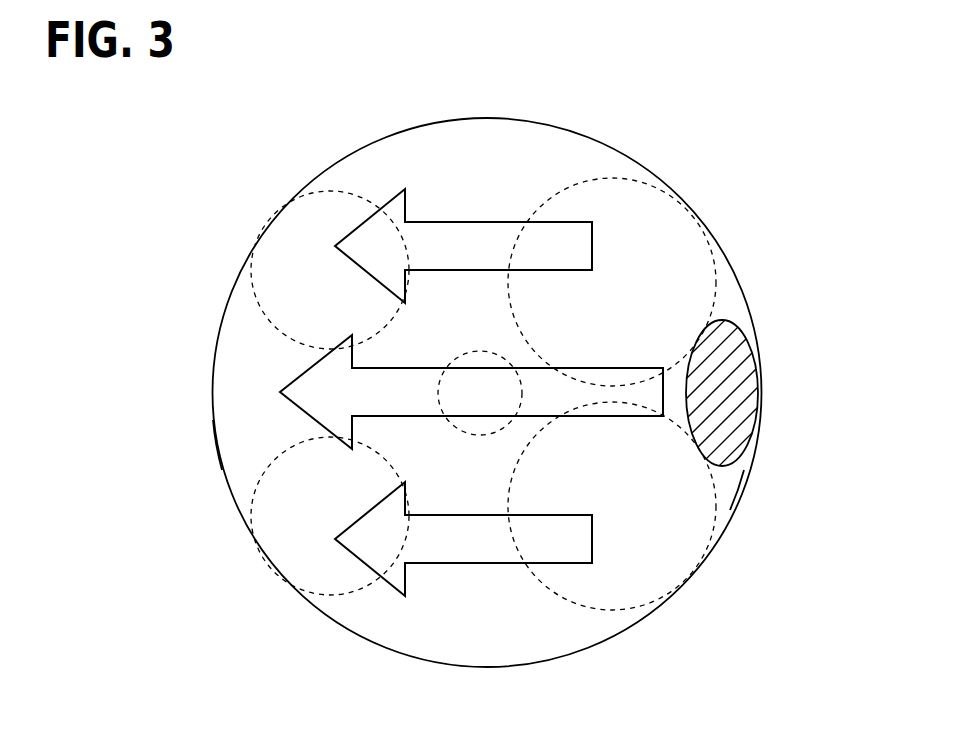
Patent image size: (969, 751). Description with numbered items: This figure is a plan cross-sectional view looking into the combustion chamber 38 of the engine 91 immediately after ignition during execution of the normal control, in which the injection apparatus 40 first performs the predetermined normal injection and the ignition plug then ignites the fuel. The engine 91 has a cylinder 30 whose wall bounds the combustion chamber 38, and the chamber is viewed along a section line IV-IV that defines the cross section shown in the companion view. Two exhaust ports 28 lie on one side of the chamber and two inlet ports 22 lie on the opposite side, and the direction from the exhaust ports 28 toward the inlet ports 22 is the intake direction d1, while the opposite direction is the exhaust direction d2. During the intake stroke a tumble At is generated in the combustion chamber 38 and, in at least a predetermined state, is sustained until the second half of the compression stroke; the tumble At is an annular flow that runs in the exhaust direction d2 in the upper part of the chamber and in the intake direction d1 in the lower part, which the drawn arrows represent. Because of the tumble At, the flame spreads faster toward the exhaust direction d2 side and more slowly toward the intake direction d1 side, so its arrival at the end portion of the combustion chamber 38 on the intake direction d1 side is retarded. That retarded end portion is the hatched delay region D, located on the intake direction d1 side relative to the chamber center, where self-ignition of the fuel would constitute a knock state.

The engine 91 is at (805, 126).
The inlet port 22 is at (674, 229).
The exhaust port 28 is at (266, 222).
The injection apparatus 40 is at (464, 352).
The tumble At is at (503, 238).
The delay region D is at (736, 328).
The cylinder 30 is at (744, 488).
The combustion chamber 38 is at (222, 455).
The line IV- IV is at (192, 392).
The intake direction d1 is at (480, 730).
The exhaust direction d2 is at (480, 730).